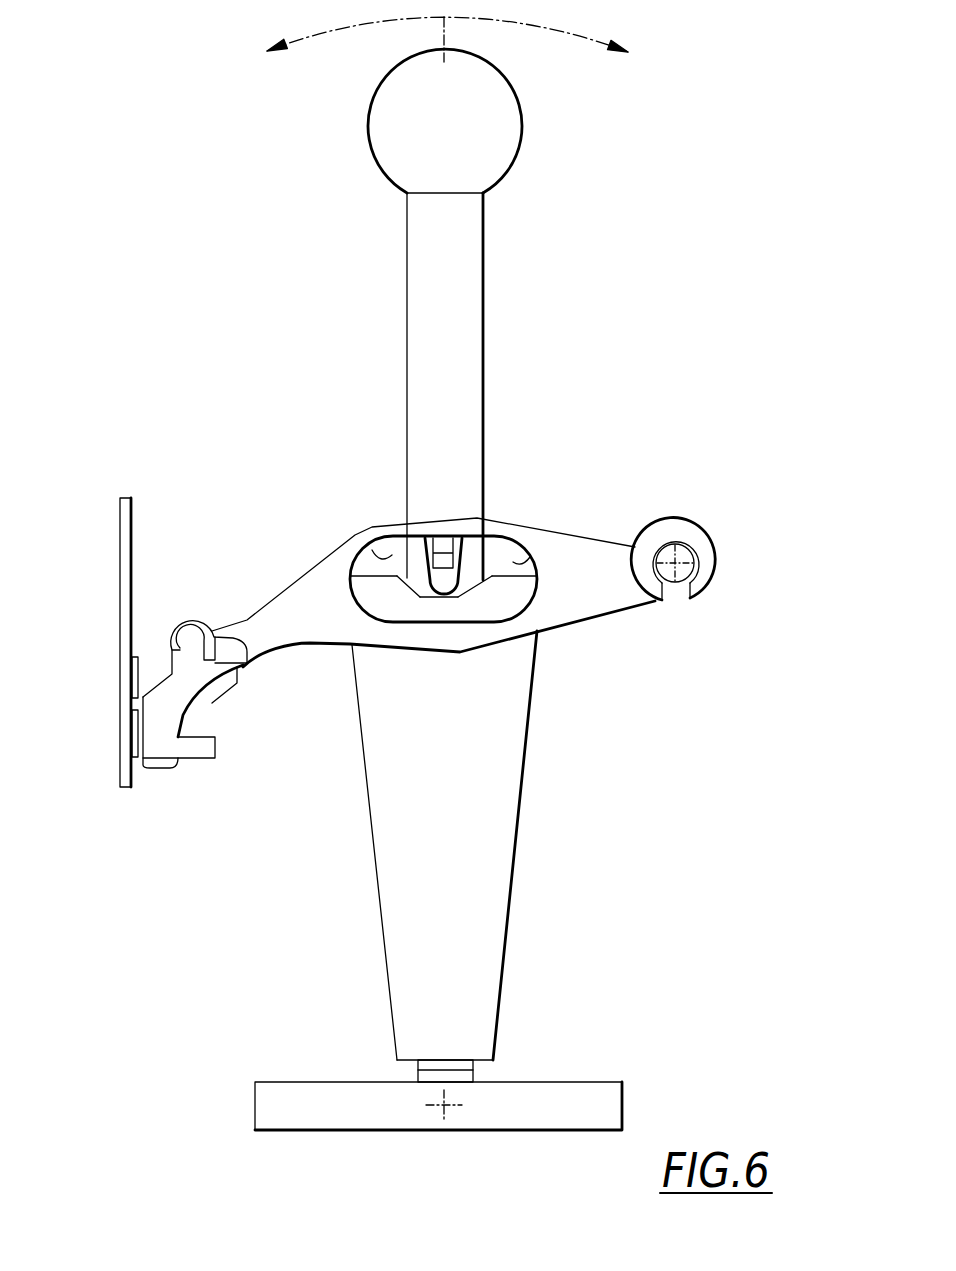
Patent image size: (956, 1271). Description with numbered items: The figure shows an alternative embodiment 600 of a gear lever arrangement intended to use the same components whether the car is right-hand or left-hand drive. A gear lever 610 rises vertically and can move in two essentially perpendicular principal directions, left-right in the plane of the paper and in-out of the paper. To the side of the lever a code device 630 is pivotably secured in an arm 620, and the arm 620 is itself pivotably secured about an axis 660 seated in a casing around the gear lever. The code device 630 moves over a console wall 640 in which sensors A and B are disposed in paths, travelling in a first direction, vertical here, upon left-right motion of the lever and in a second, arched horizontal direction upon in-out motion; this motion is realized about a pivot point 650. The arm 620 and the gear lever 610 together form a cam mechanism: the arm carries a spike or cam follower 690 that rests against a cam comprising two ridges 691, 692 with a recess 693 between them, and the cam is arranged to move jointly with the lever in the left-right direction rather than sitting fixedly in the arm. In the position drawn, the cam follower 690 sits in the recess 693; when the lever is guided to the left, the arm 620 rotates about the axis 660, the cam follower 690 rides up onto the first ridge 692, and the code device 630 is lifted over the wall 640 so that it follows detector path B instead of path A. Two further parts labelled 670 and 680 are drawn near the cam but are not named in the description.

The alternative embodiment 600 is at (220, 148).
The gear lever 610 is at (472, 265).
The arm 620 is at (555, 527).
The code device 630 is at (170, 676).
The console wall 640 is at (122, 518).
The pivot point 650 is at (444, 1105).
The axis 660 is at (677, 585).
The right spring 670 is at (513, 562).
The left spring 680 is at (372, 550).
The cam follower 690 is at (478, 568).
The ridge 691 is at (395, 578).
The first ridge 692 is at (500, 577).
The recess 693 is at (438, 597).